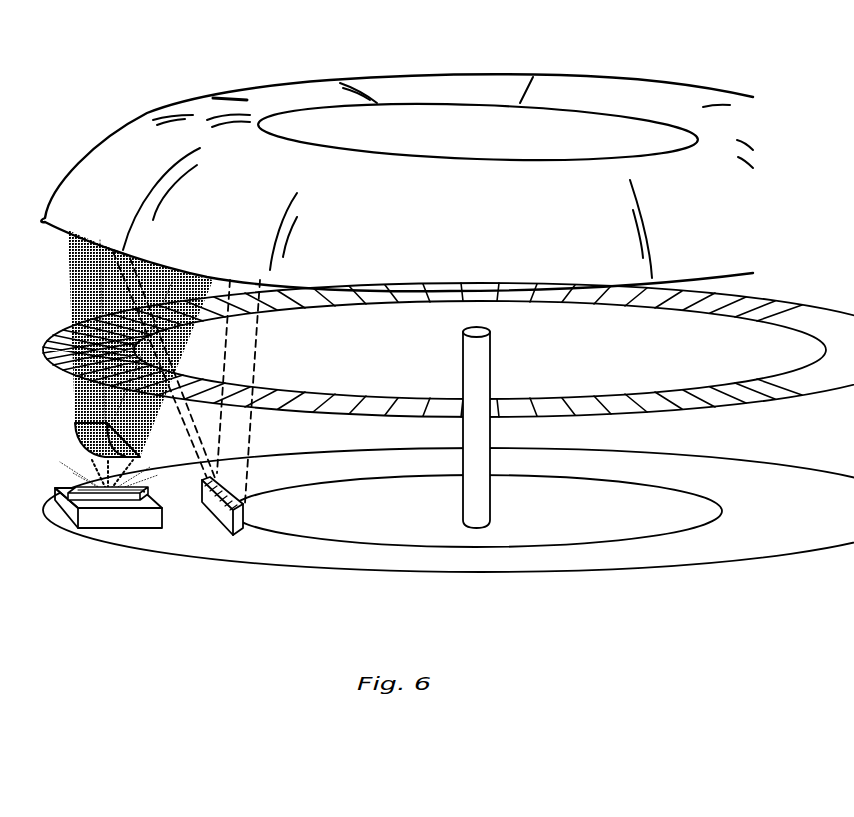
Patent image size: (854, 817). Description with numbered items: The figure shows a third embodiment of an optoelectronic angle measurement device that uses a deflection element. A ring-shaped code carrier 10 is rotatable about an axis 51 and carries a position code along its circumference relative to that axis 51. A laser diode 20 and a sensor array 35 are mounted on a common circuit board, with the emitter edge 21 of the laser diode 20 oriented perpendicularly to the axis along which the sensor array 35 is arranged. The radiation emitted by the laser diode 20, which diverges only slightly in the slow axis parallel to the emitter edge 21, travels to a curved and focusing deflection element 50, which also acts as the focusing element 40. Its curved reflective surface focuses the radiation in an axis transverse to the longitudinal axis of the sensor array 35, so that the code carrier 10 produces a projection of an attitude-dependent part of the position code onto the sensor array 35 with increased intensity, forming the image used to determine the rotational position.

The code carrier 10 is at (613, 395).
The laser diode 20 is at (122, 522).
The emitter edge 21 is at (130, 497).
The sensor array 35 is at (237, 523).
The focusing element 40 is at (397, 165).
The deflection element 50 is at (295, 97).
The axis 51 is at (472, 360).